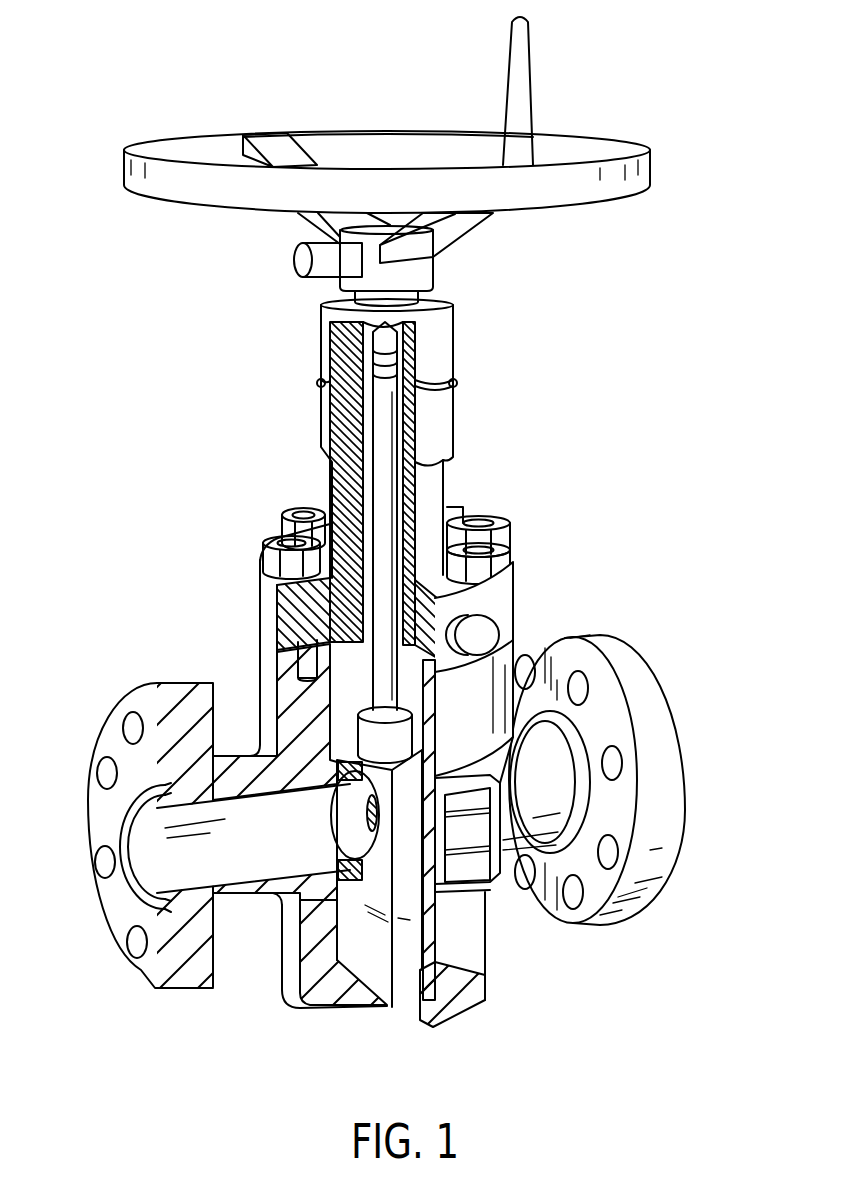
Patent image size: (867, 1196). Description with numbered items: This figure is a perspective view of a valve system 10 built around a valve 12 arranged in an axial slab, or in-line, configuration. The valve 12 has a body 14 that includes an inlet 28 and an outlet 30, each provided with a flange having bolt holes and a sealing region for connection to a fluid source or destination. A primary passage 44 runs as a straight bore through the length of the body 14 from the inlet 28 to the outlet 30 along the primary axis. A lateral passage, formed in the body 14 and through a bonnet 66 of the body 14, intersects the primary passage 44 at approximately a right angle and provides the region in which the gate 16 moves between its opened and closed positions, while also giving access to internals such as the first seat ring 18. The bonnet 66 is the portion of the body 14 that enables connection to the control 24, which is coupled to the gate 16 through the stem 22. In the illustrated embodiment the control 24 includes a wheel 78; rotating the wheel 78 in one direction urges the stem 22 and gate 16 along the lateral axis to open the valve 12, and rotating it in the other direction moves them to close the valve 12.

The valve system 10 is at (708, 256).
The valve 12 is at (607, 557).
The body 14 is at (643, 654).
The gate 16 is at (378, 953).
The first seat ring 18 is at (290, 963).
The stem 22 is at (377, 482).
The control 24 is at (443, 492).
The inlet 28 is at (78, 820).
The outlet 30 is at (692, 815).
The primary passage 44 is at (163, 860).
The bonnet 66 is at (265, 607).
The wheel 78 is at (650, 164).